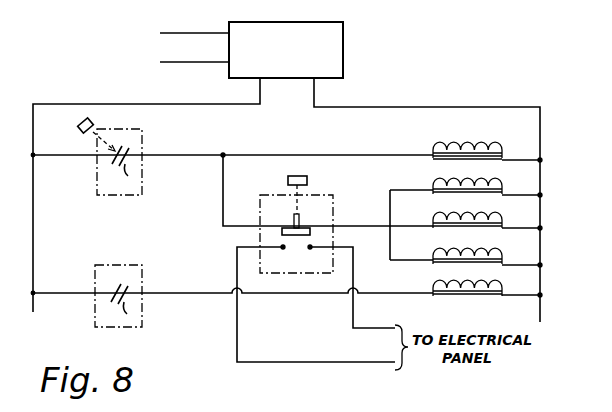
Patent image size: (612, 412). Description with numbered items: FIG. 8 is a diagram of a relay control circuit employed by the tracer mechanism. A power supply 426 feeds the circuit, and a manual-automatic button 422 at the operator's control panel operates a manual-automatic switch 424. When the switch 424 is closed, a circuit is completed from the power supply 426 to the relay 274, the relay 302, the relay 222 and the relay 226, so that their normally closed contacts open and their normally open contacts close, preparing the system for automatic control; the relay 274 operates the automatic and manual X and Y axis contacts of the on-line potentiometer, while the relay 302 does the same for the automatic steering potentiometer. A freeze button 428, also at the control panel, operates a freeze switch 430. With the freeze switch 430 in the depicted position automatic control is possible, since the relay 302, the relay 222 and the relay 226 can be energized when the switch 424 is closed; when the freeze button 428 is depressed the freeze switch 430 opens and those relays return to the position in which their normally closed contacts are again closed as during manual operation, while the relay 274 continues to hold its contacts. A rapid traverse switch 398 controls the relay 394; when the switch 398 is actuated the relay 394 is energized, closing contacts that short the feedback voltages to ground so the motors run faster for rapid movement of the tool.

The power supply 426 is at (343, 52).
The manual-automatic button 422 is at (78, 124).
The manual-automatic switch 424 is at (119, 162).
The freeze button 428 is at (288, 180).
The freeze switch 430 is at (299, 226).
The relay 274 is at (466, 142).
The relay 302 is at (445, 182).
The relay 222 is at (452, 214).
The relay 226 is at (455, 250).
The relay 394 is at (452, 284).
The rapid traverse switch 398 is at (118, 297).